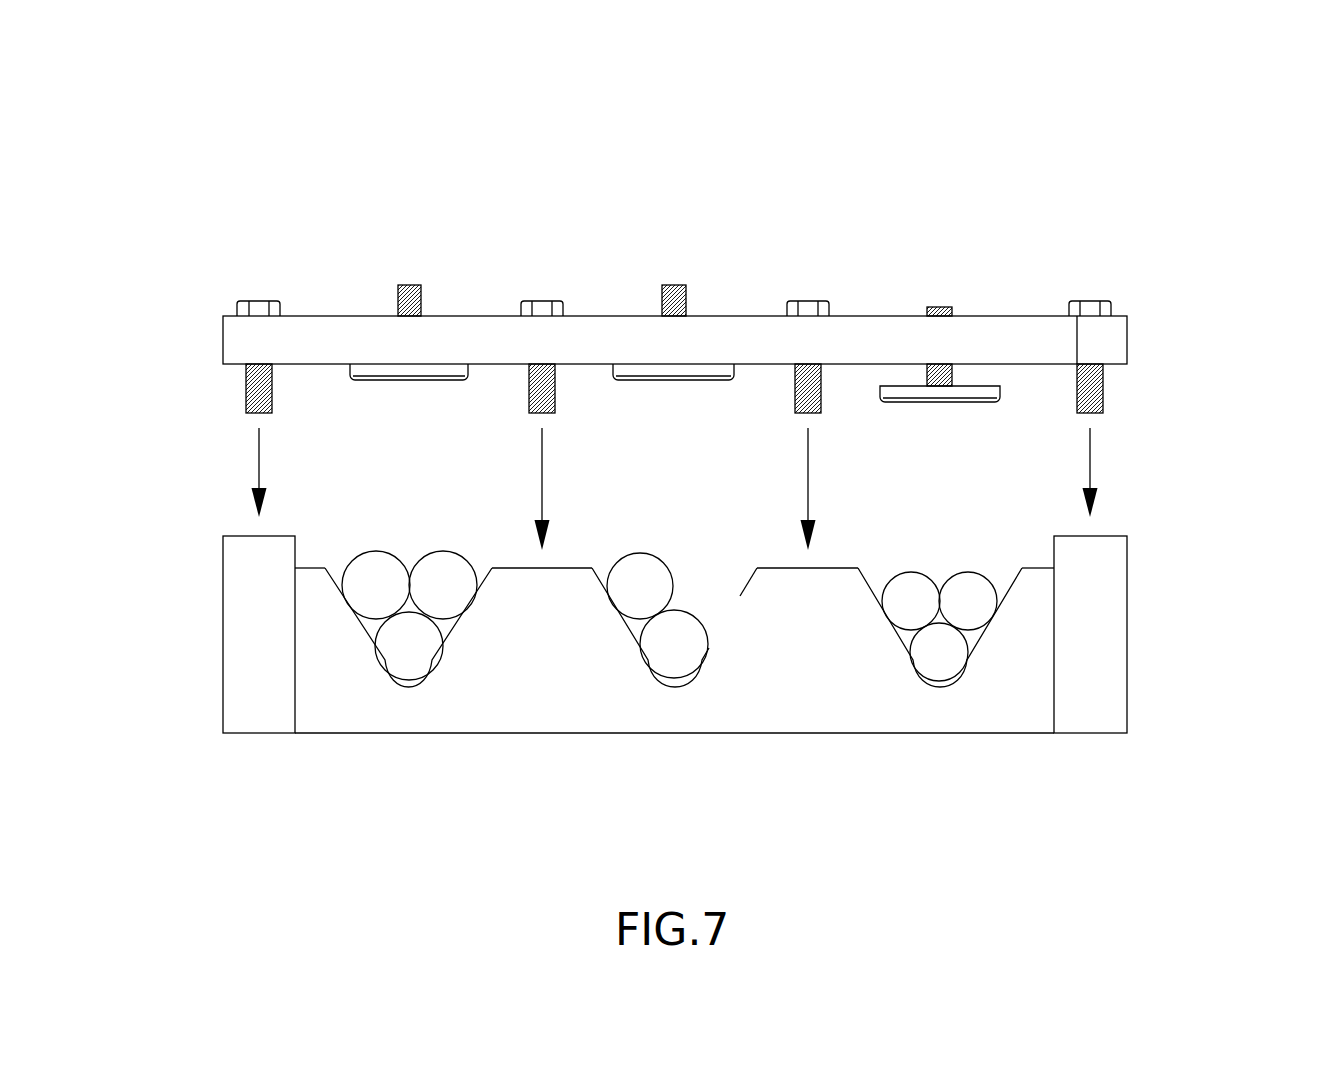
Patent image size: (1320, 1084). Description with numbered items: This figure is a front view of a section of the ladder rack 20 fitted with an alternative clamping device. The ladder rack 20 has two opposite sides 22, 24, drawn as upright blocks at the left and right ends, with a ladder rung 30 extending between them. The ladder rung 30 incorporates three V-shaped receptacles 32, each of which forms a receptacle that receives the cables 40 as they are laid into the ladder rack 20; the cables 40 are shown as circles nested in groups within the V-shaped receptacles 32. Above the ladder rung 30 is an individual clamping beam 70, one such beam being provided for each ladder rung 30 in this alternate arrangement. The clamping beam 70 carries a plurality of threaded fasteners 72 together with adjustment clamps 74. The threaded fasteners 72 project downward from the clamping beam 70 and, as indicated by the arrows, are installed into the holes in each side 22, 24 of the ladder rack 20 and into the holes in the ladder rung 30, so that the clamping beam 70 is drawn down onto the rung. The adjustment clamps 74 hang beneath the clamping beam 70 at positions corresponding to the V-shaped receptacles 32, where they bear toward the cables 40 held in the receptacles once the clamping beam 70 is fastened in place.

The ladder rack 20 is at (1175, 128).
The side 22 is at (237, 639).
The side 24 is at (1112, 648).
The ladder rung 30 is at (674, 699).
The V-shaped receptacle 32 is at (418, 683).
The cable 40 is at (382, 593).
The clamping beam 70 is at (348, 335).
The threaded fastener 72 is at (259, 300).
The adjustment clamp 74 is at (420, 370).